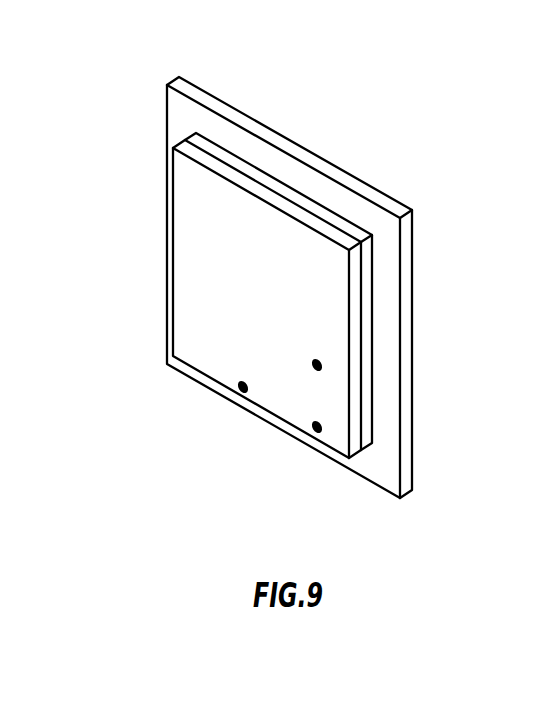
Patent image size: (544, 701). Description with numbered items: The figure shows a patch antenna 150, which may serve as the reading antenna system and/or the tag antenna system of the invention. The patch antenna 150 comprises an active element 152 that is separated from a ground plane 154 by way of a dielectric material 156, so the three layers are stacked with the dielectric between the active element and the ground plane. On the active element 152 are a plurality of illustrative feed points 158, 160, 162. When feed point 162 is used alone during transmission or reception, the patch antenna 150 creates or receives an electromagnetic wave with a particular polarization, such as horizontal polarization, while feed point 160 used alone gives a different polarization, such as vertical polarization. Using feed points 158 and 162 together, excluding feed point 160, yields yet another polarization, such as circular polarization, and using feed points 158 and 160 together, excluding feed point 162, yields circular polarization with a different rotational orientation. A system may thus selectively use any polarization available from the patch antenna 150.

The patch antenna 150 is at (138, 449).
The active element 152 is at (253, 240).
The ground plane 154 is at (402, 208).
The dielectric material 156 is at (347, 227).
The feed point 158 is at (313, 431).
The feed point 160 is at (240, 385).
The feed point 162 is at (313, 363).